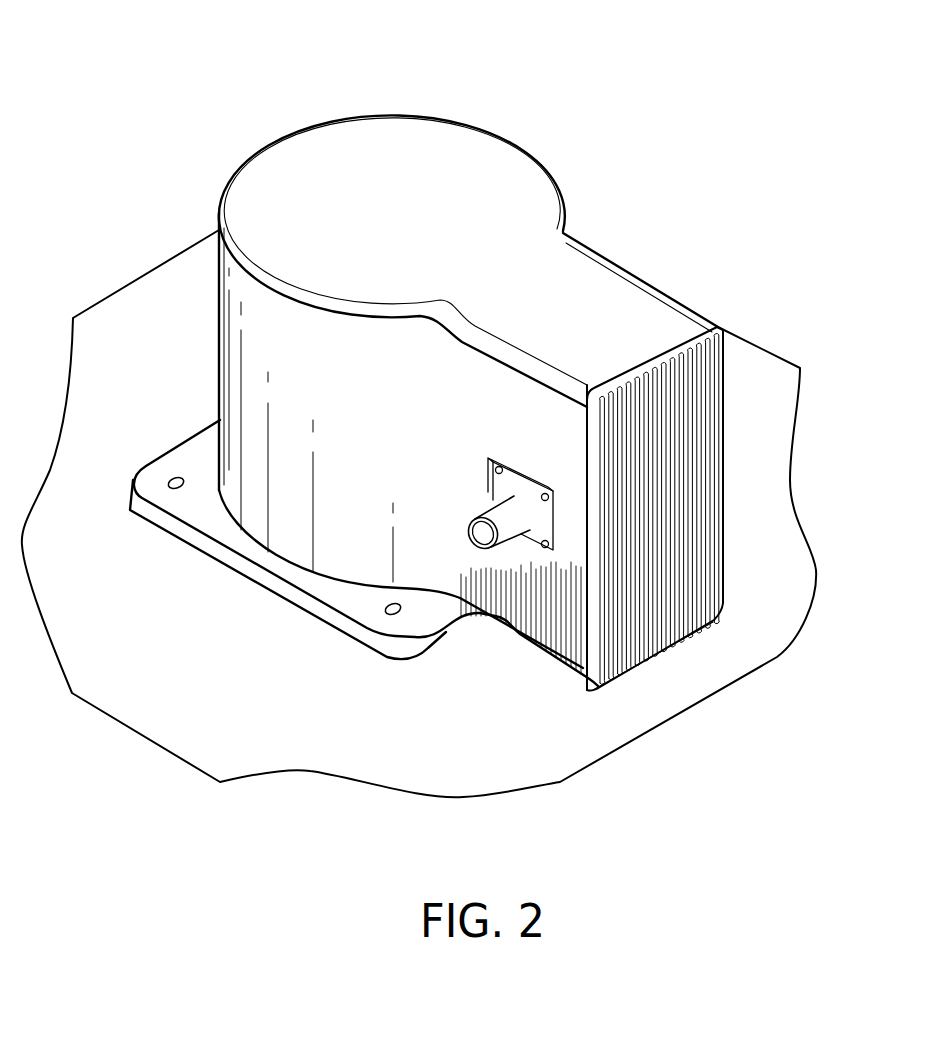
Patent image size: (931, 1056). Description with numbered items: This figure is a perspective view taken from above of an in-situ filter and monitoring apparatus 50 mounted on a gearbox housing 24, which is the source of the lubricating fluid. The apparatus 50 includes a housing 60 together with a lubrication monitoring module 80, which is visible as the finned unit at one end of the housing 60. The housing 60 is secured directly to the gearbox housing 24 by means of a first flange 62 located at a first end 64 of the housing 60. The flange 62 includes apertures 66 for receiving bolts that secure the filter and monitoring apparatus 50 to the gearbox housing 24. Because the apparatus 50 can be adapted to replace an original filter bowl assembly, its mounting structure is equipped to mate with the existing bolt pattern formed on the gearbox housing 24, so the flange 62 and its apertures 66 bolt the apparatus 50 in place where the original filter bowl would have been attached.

The gearbox housing 24 is at (331, 717).
The filter and monitoring apparatus 50 is at (680, 90).
The housing 60 is at (507, 132).
The first flange 62 is at (178, 460).
The first end 64 is at (243, 571).
The apertures 66 is at (177, 483).
The lubrication monitoring module 80 is at (655, 287).